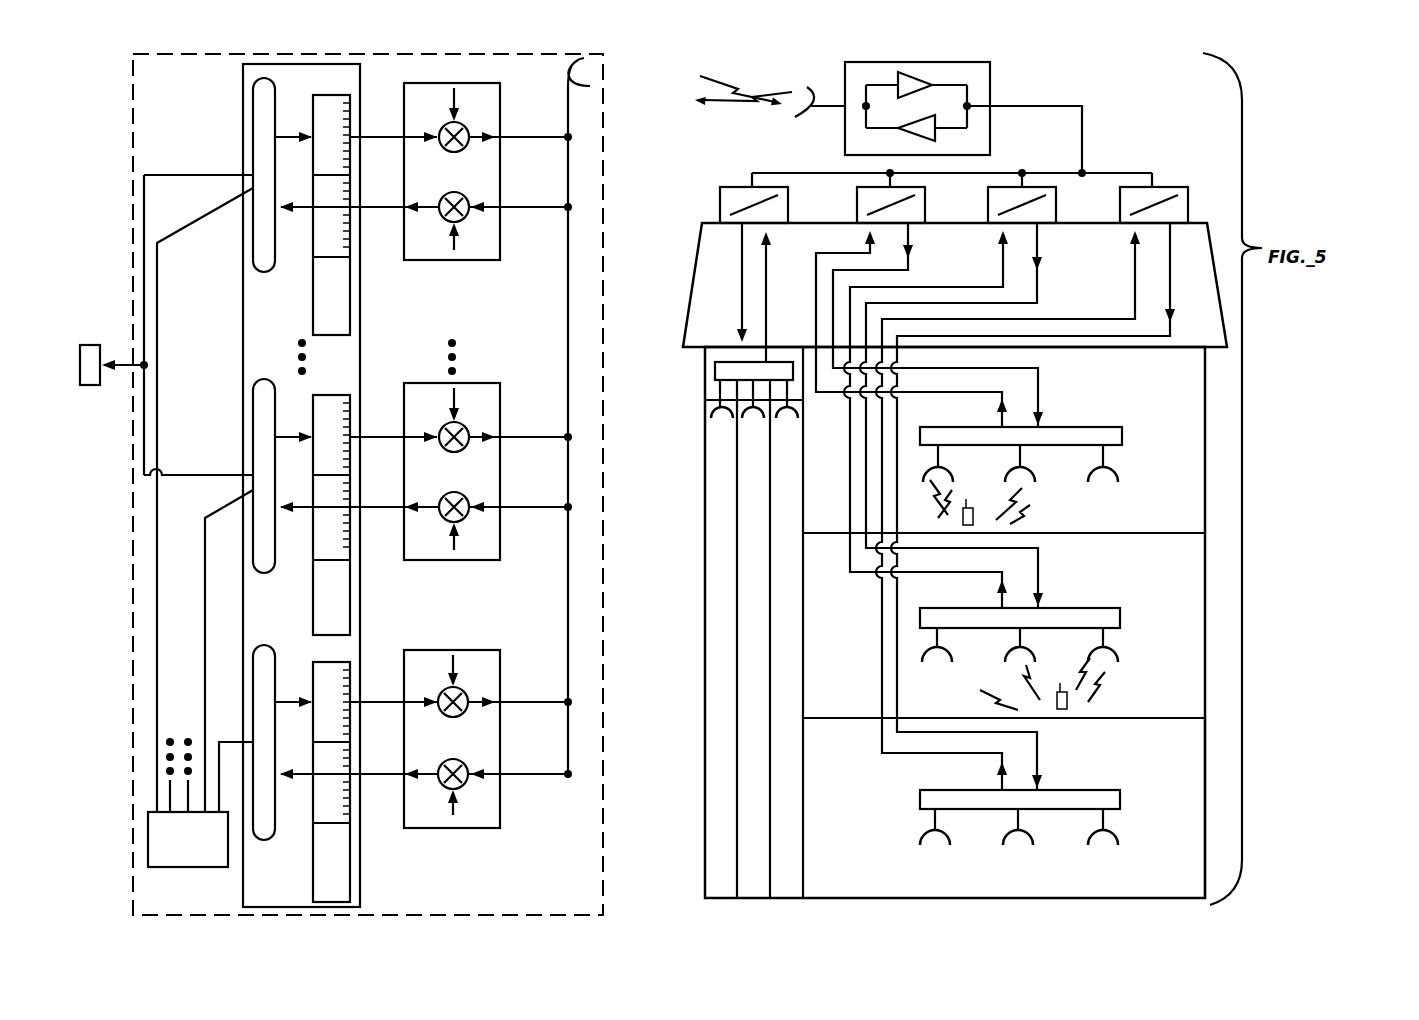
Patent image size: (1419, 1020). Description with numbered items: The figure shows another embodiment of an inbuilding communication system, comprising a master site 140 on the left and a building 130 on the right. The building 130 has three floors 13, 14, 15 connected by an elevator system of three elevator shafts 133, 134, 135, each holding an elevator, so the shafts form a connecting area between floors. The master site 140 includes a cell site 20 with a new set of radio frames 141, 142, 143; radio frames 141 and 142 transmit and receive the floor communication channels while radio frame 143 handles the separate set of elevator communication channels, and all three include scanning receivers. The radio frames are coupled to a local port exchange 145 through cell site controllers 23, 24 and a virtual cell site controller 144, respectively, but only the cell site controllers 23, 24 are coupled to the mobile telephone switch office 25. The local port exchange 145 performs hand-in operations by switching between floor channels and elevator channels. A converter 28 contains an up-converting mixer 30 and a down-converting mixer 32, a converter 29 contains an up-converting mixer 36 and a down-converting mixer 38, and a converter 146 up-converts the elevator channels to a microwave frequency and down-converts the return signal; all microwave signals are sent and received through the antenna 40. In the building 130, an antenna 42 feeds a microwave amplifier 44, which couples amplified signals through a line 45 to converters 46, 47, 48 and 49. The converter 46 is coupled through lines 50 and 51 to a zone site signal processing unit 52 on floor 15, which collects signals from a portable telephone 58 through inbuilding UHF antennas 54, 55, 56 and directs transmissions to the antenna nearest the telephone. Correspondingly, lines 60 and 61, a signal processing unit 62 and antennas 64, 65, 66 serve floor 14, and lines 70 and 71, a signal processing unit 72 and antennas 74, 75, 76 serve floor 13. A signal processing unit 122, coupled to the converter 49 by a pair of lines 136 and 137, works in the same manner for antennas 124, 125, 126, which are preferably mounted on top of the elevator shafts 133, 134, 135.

The floor 13 is at (1205, 828).
The floor 14 is at (1205, 650).
The floor 15 is at (1205, 478).
The cell site 20 is at (360, 320).
The cell site controller 23 is at (263, 272).
The cell site controller 24 is at (263, 573).
The mobile telephone switch office 25 is at (90, 345).
The converter 28 is at (459, 188).
The converter 29 is at (459, 488).
The up-converting mixer 30 is at (456, 152).
The down-converting mixer 32 is at (447, 190).
The up-converting mixer 36 is at (456, 452).
The down-converting mixer 38 is at (447, 490).
The antenna 40 is at (560, 64).
The antenna 42 is at (758, 106).
The microwave amplifier 44 is at (990, 142).
The line 45 is at (1082, 140).
The converter 46 is at (856, 210).
The converter 47 is at (986, 214).
The converter 48 is at (1118, 214).
The converter 49 is at (718, 212).
The line 50 is at (945, 392).
The line 51 is at (1038, 392).
The zone site signal processing unit 52 is at (1037, 440).
The inbuilding UHF antenna 54 is at (950, 472).
The inbuilding UHF antenna 55 is at (1033, 472).
The inbuilding UHF antenna 56 is at (1116, 472).
The portable telephone 58 is at (974, 510).
The line 60 is at (945, 572).
The line 61 is at (1038, 572).
The zone site signal processing unit 62 is at (1037, 620).
The inbuilding antenna 64 is at (951, 654).
The inbuilding antenna 65 is at (1033, 654).
The inbuilding antenna 66 is at (1116, 654).
The line 70 is at (932, 754).
The line 71 is at (1037, 754).
The zone site signal processing unit 72 is at (1037, 802).
The inbuilding antenna 74 is at (951, 836).
The inbuilding antenna 75 is at (1033, 836).
The inbuilding antenna 76 is at (1116, 836).
The signal processing unit 122 is at (714, 370).
The antenna 124 is at (730, 425).
The antenna 125 is at (760, 425).
The antenna 126 is at (793, 425).
The building 130 is at (1165, 898).
The elevator shaft 133 is at (713, 852).
The elevator shaft 134 is at (743, 840).
The elevator shaft 135 is at (785, 828).
The line 136 is at (768, 290).
The line 137 is at (742, 290).
The master site 140 is at (603, 665).
The radio frame 141 is at (330, 96).
The radio frame 142 is at (343, 396).
The radio frame 143 is at (343, 663).
The virtual cell site controller 144 is at (263, 840).
The local port exchange 145 is at (162, 867).
The converter 146 is at (470, 828).